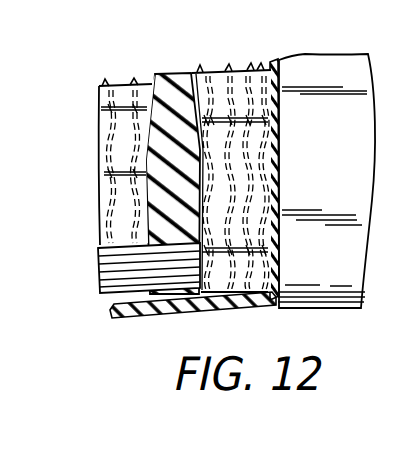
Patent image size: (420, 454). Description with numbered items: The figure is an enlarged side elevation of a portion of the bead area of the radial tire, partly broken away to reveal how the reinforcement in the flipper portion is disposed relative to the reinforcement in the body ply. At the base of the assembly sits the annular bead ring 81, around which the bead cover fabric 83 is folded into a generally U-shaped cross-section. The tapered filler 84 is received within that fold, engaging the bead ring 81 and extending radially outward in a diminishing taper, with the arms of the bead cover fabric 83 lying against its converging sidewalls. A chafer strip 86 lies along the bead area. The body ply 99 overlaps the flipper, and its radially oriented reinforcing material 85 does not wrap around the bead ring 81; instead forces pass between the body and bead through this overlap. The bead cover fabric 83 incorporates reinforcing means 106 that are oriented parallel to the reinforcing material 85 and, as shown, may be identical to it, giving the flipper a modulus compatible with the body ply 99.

The bead ring 81 is at (102, 280).
The bead cover fabric 83 is at (242, 290).
The filler 84 is at (168, 75).
The reinforcing material 85 is at (130, 82).
The chafer strip 86 is at (178, 310).
The body ply 99 is at (102, 122).
The reinforcing means 106 is at (215, 72).